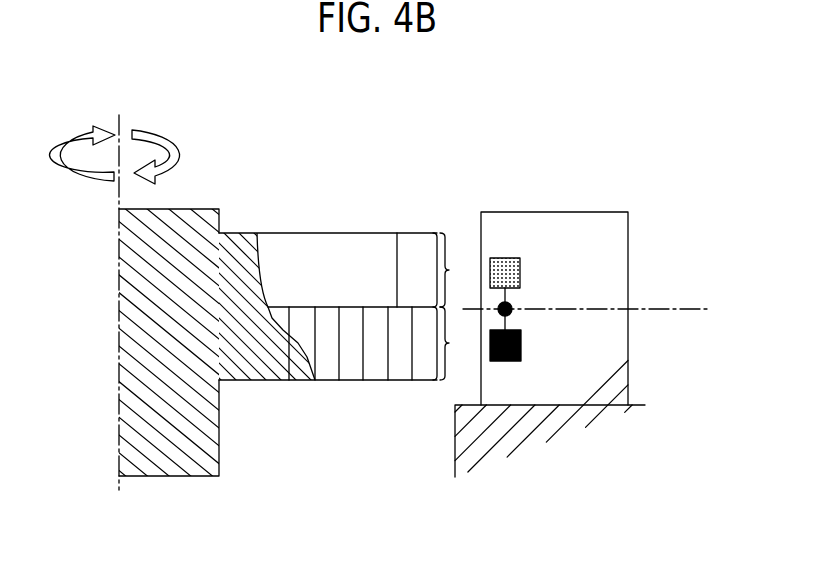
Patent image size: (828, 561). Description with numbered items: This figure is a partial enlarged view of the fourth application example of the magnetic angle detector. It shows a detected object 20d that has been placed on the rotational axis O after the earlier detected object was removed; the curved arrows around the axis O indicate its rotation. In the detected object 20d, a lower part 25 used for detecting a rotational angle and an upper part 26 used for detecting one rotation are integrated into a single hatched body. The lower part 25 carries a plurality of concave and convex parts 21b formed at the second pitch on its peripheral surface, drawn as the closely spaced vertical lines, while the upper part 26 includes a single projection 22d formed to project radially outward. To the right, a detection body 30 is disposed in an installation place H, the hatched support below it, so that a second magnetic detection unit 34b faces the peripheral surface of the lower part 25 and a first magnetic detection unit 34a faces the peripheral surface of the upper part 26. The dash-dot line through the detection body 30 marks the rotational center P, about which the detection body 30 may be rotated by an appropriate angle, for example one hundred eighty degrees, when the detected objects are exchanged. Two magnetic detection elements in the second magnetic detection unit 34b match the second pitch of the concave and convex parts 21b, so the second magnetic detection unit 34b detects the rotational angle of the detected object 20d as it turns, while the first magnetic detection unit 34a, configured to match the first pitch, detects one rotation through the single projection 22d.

The rotation axis O is at (119, 129).
The detected object 20d is at (237, 242).
The projection 22d is at (410, 262).
The upper part 26 is at (372, 270).
The lower part 25 is at (454, 343).
The concave and convex parts 21b is at (350, 362).
The detection unit 30 is at (593, 182).
The first magnetic detection unit 34a is at (507, 258).
The second magnetic detection unit 34b is at (521, 338).
The rotational center P is at (677, 309).
The installation place H is at (461, 404).